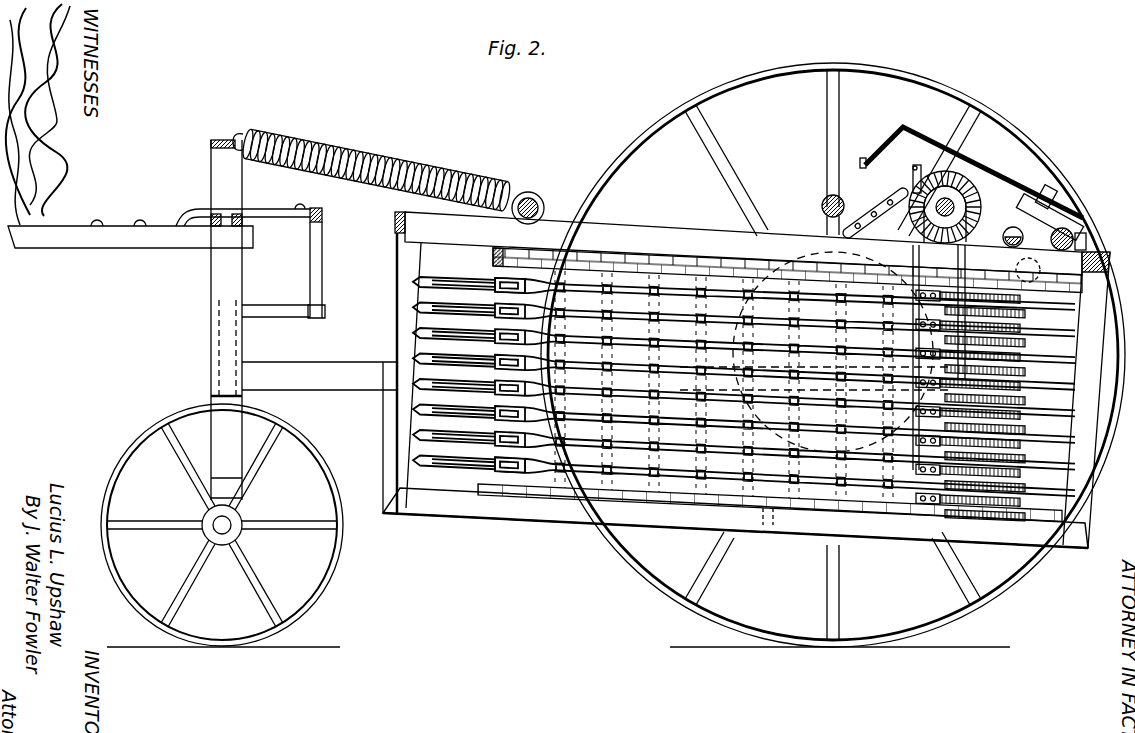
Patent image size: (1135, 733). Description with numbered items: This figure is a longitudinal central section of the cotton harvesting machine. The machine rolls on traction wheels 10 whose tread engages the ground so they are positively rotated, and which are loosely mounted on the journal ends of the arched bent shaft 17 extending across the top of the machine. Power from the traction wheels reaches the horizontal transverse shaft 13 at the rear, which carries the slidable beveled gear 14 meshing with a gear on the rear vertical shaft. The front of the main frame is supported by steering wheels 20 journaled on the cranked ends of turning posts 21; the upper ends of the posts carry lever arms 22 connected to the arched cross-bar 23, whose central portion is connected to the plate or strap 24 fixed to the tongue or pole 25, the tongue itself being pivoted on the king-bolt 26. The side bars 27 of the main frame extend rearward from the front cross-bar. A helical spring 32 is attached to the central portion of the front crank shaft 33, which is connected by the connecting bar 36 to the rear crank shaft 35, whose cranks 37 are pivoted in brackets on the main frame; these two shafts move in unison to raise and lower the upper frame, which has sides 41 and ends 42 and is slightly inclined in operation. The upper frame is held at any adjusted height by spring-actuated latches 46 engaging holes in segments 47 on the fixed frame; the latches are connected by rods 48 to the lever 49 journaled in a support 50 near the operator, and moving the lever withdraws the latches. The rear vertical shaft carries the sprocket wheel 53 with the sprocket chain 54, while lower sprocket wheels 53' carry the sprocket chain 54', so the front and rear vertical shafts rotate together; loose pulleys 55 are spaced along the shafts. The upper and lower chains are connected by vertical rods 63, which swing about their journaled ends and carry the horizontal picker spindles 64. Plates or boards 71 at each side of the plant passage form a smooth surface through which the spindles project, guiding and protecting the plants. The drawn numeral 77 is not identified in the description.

The traction wheel 10 is at (849, 67).
The horizontal transverse shaft 13 is at (912, 200).
The slidable beveled gear 14 is at (946, 172).
The bent shaft 17 is at (823, 199).
The steering wheel 20 is at (118, 471).
The turning post 21 is at (211, 412).
The lever arm 22 is at (254, 306).
The arched cross-bar 23 is at (323, 244).
The plate or strap 24 is at (275, 204).
The tongue or pole 25 is at (123, 243).
The king-bolt 26 is at (213, 210).
The side bar 27 is at (310, 386).
The helical spring 32 is at (340, 152).
The crank shaft 33 is at (534, 194).
The crank shaft 35 is at (1073, 236).
The connecting bar 36 is at (780, 365).
The crank 37 is at (211, 157).
The side of upper frame 41 is at (650, 228).
The end of upper frame 42 is at (396, 214).
The spring-actuated latch 46 is at (1009, 230).
The segment 47 is at (1087, 250).
The rod 48 is at (1087, 400).
The lever 49 is at (979, 180).
The support 50 is at (1030, 194).
The sprocket wheel 53 is at (747, 368).
The sprocket wheel 53' is at (747, 524).
The sprocket chain 54 is at (716, 367).
The sprocket chain 54' is at (759, 533).
The pulley 55 is at (1036, 281).
The vertical rod 63 is at (497, 500).
The picker spindle 64 is at (1005, 488).
The plate or board 71 is at (676, 490).
The drum 77 is at (833, 363).